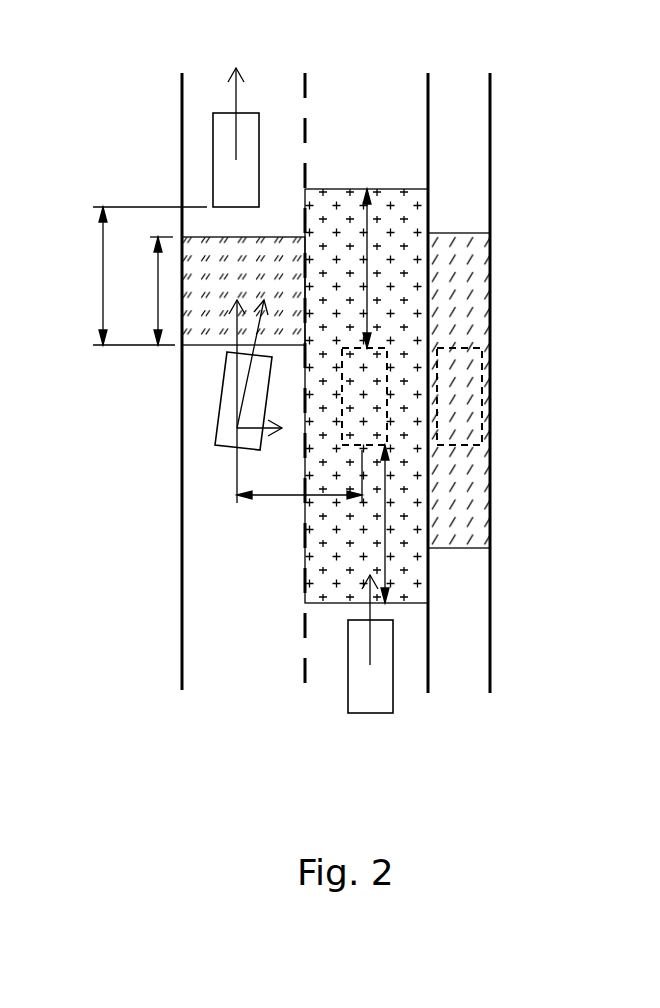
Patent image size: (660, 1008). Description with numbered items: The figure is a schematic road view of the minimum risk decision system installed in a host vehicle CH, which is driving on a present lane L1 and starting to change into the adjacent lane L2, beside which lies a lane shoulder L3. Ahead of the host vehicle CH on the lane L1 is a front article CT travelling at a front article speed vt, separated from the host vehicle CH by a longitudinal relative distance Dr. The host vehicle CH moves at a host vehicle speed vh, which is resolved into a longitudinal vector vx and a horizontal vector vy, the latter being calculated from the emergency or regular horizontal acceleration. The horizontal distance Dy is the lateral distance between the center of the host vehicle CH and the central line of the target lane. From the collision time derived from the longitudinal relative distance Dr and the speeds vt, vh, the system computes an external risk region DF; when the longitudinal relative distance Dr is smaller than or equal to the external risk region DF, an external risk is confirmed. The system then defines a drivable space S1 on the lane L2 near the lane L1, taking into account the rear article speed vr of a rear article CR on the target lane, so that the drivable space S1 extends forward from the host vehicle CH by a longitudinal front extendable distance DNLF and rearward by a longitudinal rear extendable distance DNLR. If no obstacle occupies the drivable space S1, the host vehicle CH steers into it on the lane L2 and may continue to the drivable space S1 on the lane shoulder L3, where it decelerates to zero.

The lane L1 is at (228, 697).
The lane L2 is at (335, 697).
The lane shoulder L3 is at (458, 697).
The drivable space S1 is at (390, 200).
The front article CT is at (213, 162).
The rear article CR is at (348, 643).
The host vehicle CH is at (220, 390).
The front article speed vt is at (233, 96).
The rear article speed vr is at (358, 609).
The longitudinal vector of the host vehicle speed vx is at (226, 388).
The host vehicle speed vh is at (256, 351).
The horizontal vector vy is at (263, 409).
The longitudinal relative distance Dr is at (127, 276).
The external risk region DF is at (140, 291).
The longitudinal front extendable distance DNLF is at (367, 278).
The longitudinal rear extendable distance DNLR is at (385, 578).
The horizontal distance Dy is at (299, 495).